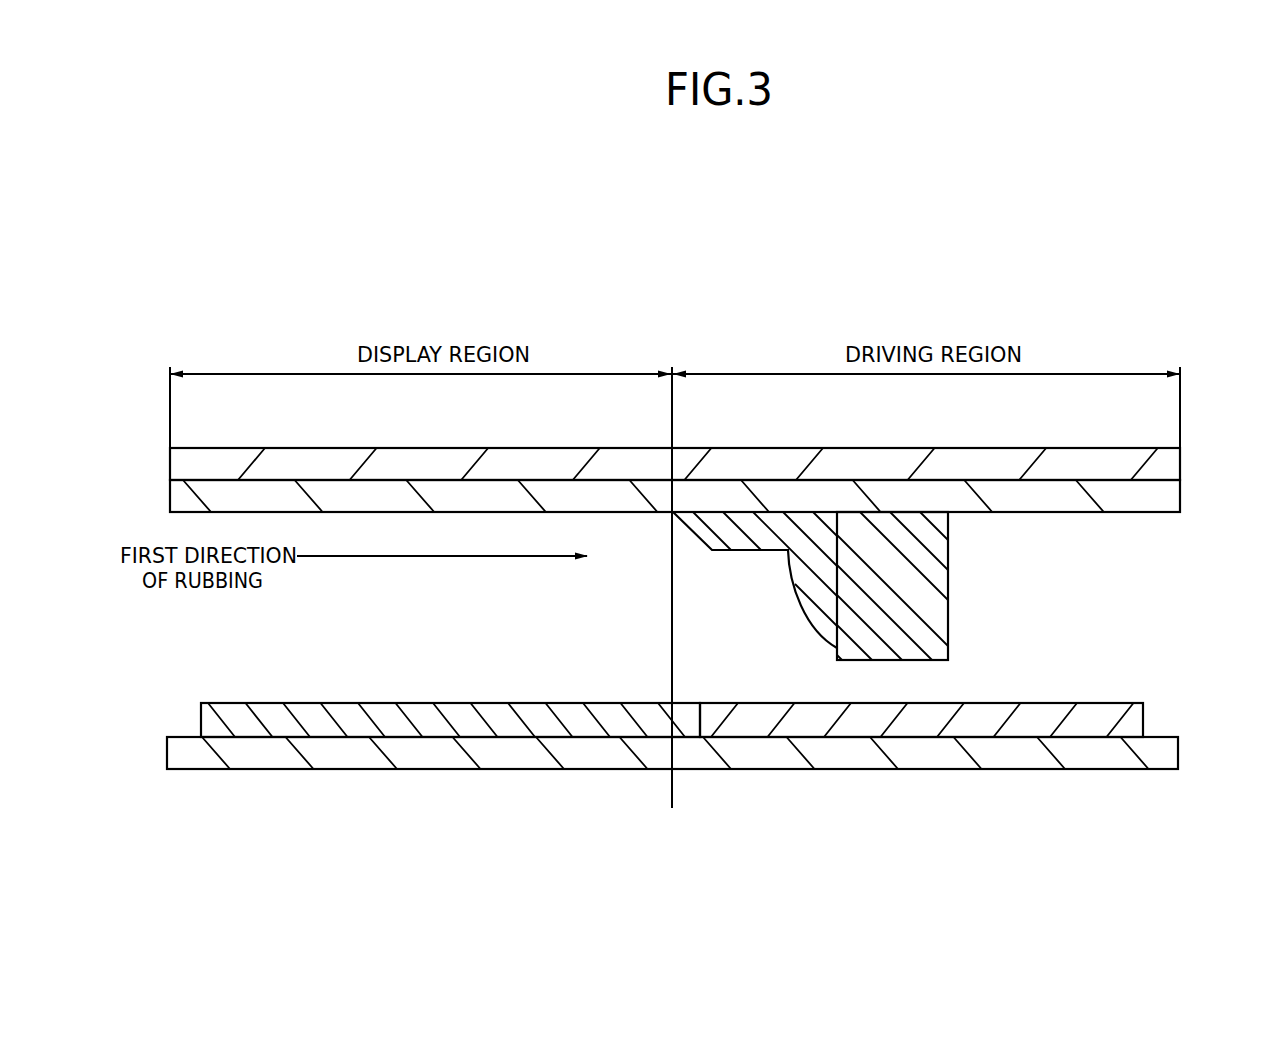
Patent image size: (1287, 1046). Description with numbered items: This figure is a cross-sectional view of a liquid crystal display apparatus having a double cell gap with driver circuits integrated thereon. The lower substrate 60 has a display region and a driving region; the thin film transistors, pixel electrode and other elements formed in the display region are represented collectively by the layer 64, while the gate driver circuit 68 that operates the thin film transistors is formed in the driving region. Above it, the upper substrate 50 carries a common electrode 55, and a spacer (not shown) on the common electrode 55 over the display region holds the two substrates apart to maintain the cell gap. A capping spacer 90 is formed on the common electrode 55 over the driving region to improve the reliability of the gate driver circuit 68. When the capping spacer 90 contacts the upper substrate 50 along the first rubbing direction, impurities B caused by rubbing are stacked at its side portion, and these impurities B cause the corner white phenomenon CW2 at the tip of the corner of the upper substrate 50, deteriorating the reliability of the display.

The upper substrate 50 is at (1180, 460).
The common electrode 55 is at (1180, 500).
The lower substrate 60 is at (1198, 752).
The thin film transistors, pixel electrode and other elements 64 is at (203, 716).
The gate driver circuit 68 is at (1129, 688).
The capping spacer 90 is at (948, 600).
The impurities B is at (808, 561).
The corner white phenomenon CW2 is at (670, 603).